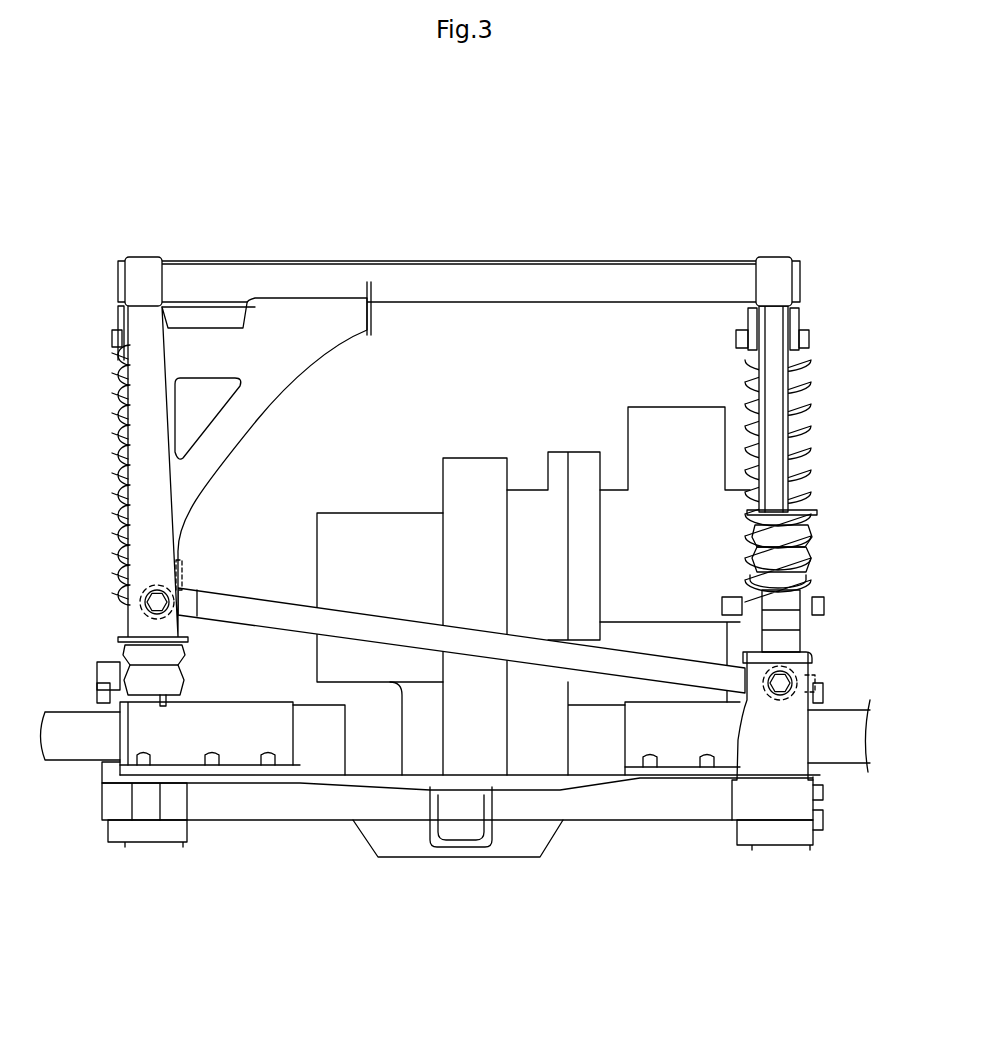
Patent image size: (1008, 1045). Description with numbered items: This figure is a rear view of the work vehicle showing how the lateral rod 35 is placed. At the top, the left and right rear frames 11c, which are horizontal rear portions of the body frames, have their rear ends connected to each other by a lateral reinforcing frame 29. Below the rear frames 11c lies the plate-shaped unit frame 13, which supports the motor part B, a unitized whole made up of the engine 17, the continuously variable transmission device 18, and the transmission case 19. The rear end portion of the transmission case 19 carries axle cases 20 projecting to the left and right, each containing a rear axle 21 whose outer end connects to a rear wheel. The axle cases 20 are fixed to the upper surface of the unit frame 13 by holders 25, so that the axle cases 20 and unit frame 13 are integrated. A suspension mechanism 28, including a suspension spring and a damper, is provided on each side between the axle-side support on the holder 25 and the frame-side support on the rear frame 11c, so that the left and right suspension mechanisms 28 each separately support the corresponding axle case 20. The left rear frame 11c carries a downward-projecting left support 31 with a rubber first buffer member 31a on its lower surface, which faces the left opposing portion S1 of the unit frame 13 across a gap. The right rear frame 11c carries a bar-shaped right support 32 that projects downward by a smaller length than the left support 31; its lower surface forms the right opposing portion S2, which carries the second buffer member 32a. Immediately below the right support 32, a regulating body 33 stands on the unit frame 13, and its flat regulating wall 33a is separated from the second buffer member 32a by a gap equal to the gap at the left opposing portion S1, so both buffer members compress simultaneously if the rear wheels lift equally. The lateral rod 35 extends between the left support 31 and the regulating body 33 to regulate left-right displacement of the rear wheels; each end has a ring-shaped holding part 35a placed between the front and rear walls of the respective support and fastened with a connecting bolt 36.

The rear frame 11c is at (152, 257).
The unit frame 13 is at (106, 775).
The engine 17 is at (383, 526).
The continuously variable transmission device 18 is at (666, 516).
The transmission case 19 is at (473, 476).
The axle case 20 is at (325, 748).
The rear axle 21 is at (68, 726).
The holder 25 is at (258, 716).
The suspension mechanism 28 is at (104, 487).
The lateral reinforcing frame 29 is at (532, 276).
The left support 31 is at (178, 485).
The first buffer member 31a is at (182, 678).
The right support 32 is at (758, 342).
The second buffer member 32a is at (800, 545).
The regulating body 33 is at (780, 732).
The regulating wall 33a is at (810, 642).
The lateral rod 35 is at (395, 632).
The holding part 35a is at (168, 590).
The connecting bolt 36 is at (172, 607).
The motor part B is at (465, 335).
The left opposing portion S1 is at (158, 780).
The right opposing portion S2 is at (803, 545).